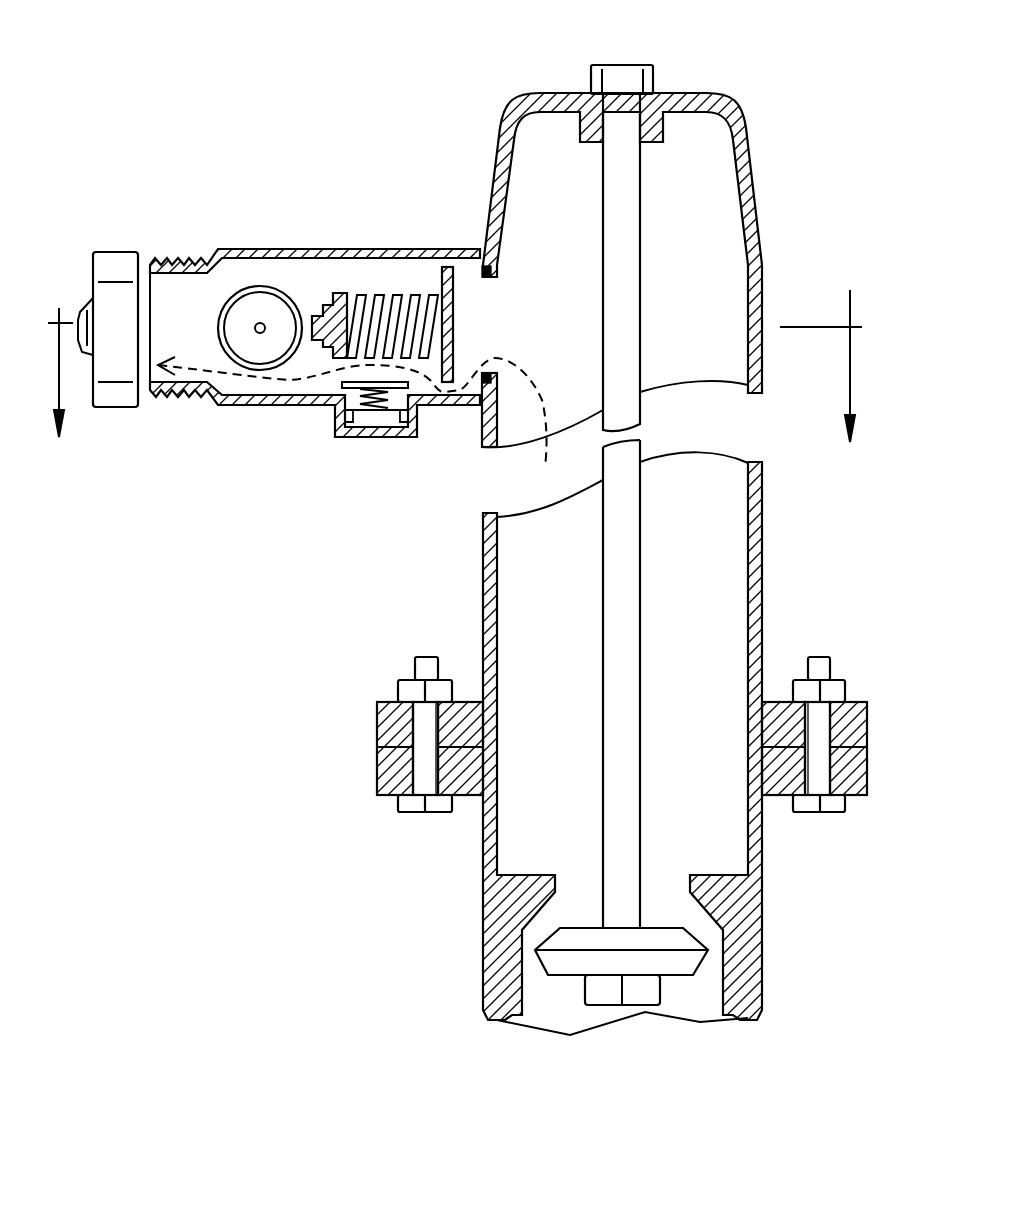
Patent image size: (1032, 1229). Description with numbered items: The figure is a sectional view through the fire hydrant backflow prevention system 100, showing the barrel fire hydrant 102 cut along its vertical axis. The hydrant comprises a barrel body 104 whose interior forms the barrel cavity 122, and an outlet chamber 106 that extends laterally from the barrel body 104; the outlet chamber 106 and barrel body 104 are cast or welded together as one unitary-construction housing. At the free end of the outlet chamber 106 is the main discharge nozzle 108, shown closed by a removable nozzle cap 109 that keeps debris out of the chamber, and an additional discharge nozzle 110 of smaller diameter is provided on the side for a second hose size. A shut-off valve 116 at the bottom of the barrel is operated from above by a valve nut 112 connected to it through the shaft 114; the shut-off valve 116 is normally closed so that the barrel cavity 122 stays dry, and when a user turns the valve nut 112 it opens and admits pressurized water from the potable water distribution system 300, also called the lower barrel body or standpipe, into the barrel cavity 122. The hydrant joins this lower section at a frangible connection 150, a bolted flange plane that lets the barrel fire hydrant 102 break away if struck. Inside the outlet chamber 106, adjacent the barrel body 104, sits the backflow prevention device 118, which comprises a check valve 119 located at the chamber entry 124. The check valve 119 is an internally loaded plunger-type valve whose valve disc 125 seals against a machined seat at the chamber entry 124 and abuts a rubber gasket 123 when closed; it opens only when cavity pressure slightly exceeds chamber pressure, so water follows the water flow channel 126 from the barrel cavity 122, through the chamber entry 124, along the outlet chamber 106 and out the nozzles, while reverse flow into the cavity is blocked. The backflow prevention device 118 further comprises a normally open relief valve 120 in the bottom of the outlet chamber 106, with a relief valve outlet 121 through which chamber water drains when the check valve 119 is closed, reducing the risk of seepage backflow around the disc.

The fire hydrant backflow prevention system 100 is at (273, 110).
The barrel fire hydrant 102 is at (523, 98).
The barrel body 104 is at (492, 176).
The outlet chamber 106 is at (297, 248).
The discharge nozzle 108 is at (178, 262).
The removable nozzle cap 109 is at (108, 252).
The additional discharge nozzle 110 is at (253, 372).
The valve nut 112 is at (632, 65).
The shaft 114 is at (641, 345).
The shut-off valve 116 is at (677, 975).
The backflow prevention device 118 is at (445, 252).
The check valve 119 is at (440, 280).
The relief valve 120 is at (380, 432).
The relief valve outlet 121 is at (396, 432).
The barrel cavity 122 is at (697, 190).
The rubber gasket 123 is at (497, 268).
The chamber entry 124 is at (500, 310).
The valve disc 125 is at (453, 350).
The water flow channel 126 is at (200, 366).
The frangible connection 150 is at (377, 747).
The potable water distribution system 300 is at (483, 990).